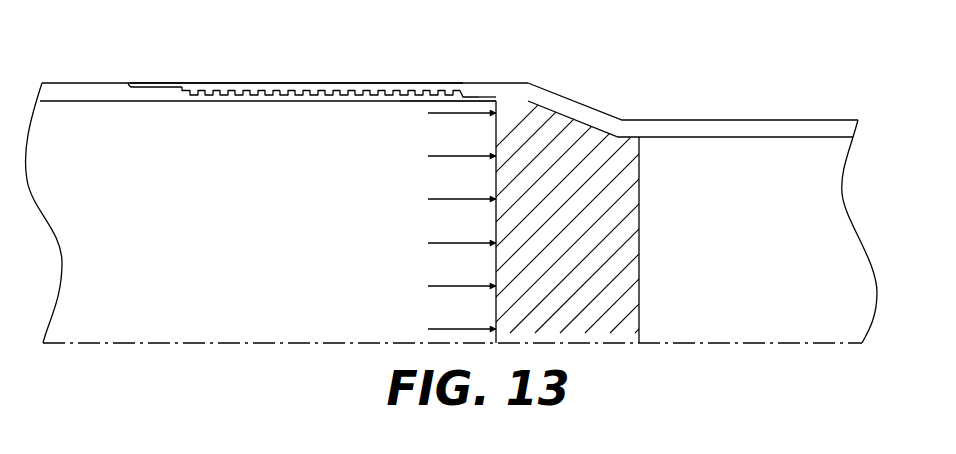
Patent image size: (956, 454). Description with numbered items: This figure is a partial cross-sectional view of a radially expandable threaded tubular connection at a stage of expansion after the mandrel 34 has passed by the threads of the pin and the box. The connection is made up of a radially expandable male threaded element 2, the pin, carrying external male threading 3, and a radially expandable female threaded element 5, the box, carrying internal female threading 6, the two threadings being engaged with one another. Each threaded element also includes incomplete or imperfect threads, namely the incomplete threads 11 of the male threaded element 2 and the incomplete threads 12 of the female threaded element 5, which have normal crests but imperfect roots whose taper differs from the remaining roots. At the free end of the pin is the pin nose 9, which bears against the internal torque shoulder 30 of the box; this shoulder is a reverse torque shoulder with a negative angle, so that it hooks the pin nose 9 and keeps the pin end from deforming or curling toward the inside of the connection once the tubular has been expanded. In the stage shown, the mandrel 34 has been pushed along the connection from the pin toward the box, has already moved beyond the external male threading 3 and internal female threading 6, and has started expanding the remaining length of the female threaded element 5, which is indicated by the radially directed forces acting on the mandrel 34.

The male threaded element 2 is at (83, 94).
The external male threading 3 is at (226, 93).
The female threaded element 5 is at (752, 127).
The internal female threading 6 is at (307, 90).
The pin nose 9 is at (486, 97).
The incomplete threads 11 is at (423, 99).
The incomplete threads 12 is at (180, 84).
The internal torque shoulder 30 is at (472, 97).
The mandrel 34 is at (577, 230).